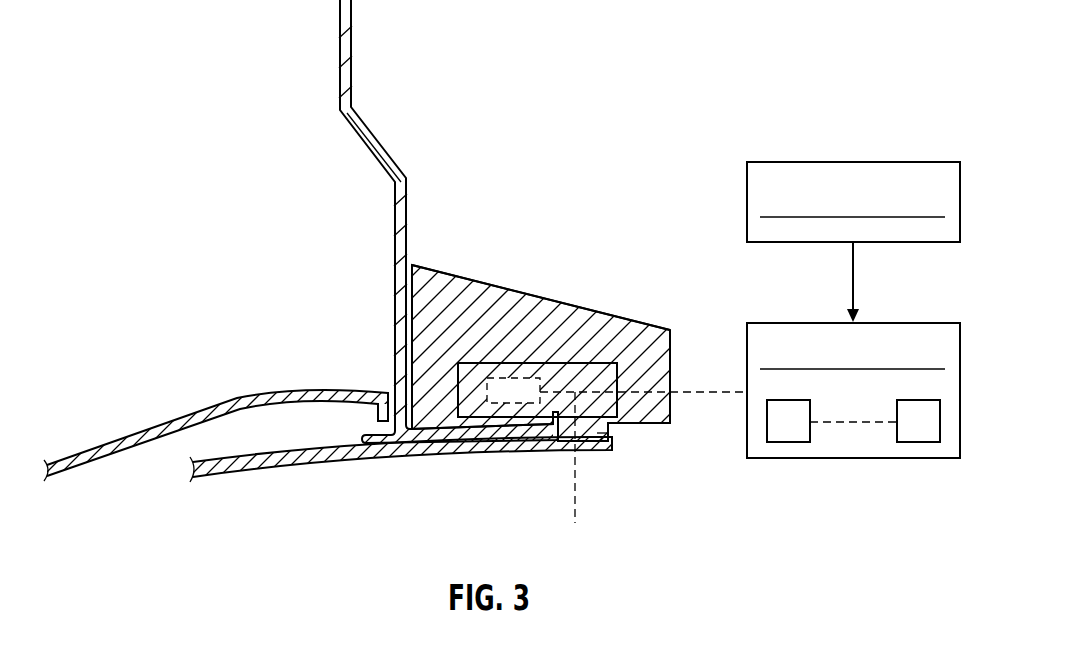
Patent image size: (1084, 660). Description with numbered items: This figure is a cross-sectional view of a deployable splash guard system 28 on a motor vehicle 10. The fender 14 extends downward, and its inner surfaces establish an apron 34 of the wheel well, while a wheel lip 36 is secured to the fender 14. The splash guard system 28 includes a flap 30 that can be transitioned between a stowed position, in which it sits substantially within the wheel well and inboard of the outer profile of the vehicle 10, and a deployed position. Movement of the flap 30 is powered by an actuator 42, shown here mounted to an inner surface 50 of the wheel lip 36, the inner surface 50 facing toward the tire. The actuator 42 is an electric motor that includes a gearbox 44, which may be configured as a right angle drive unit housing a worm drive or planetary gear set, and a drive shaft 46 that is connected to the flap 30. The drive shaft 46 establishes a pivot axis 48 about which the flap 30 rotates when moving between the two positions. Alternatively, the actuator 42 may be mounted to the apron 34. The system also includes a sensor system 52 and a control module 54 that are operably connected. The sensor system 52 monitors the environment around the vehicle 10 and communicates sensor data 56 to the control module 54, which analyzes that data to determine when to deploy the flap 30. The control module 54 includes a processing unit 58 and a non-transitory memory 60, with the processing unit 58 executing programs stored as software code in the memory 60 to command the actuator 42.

The motor vehicle 10 is at (280, 41).
The fender 14 is at (352, 58).
The deployable splash guard system 28 is at (578, 329).
The flap 30 is at (447, 455).
The apron 34 is at (252, 397).
The wheel lip 36 is at (516, 290).
The actuator 42 is at (603, 365).
The gearbox 44 is at (512, 403).
The drive shaft 46 is at (592, 428).
The pivot axis 48 is at (578, 488).
The inner surface 50 is at (460, 292).
The sensor system 52 is at (905, 162).
The control module 54 is at (853, 400).
The sensor data 56 is at (850, 270).
The processing unit 58 is at (788, 442).
The memory 60 is at (918, 442).